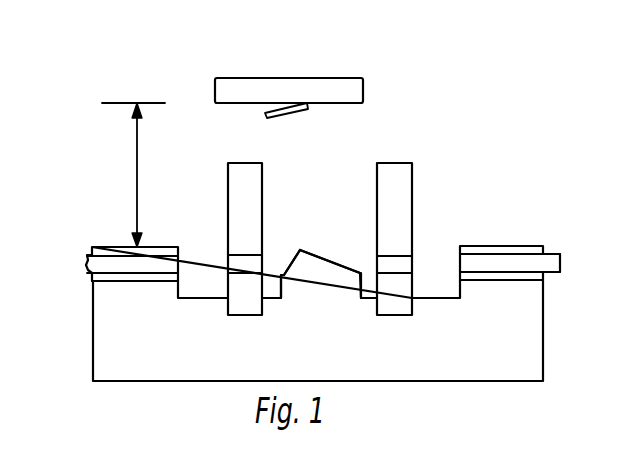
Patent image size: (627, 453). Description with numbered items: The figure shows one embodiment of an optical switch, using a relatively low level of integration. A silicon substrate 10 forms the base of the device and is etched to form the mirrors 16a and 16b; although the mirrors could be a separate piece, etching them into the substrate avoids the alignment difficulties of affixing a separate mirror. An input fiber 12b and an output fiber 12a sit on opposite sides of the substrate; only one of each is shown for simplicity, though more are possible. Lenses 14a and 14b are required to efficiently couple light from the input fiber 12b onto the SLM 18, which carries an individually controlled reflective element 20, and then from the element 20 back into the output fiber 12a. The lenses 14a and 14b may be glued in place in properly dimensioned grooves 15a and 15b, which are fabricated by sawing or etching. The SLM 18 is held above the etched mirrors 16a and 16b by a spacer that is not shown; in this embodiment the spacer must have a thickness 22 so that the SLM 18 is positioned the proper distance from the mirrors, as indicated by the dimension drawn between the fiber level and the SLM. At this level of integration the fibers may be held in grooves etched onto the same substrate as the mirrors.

The silicon substrate 10 is at (452, 363).
The output fiber 12a is at (550, 260).
The input fiber 12b is at (107, 262).
The lens 14a is at (398, 173).
The lens 14b is at (250, 166).
The groove 15a is at (395, 317).
The groove 15b is at (240, 318).
The mirror 16a is at (339, 266).
The mirror 16b is at (300, 250).
The SLM 18 is at (354, 94).
The individually controlled reflective element 20 is at (305, 108).
The thickness 22 is at (137, 177).